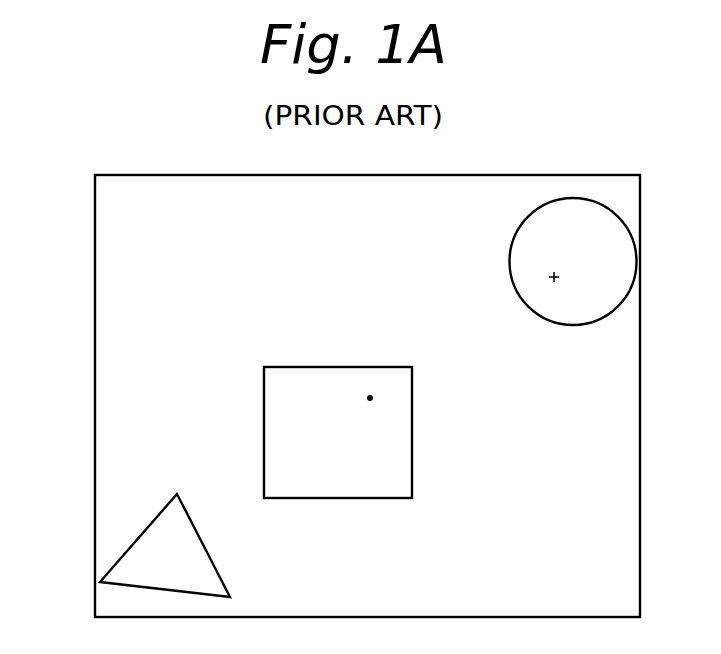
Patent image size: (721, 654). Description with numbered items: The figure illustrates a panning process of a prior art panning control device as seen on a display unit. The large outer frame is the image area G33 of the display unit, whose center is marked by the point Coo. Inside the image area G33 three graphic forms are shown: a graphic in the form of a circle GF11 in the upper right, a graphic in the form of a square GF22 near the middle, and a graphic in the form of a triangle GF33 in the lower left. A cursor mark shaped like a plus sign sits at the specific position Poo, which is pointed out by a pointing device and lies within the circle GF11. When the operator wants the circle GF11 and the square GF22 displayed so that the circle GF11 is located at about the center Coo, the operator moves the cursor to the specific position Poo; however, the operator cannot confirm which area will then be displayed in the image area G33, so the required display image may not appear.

The image area G33 is at (107, 382).
The graphic in the form of a circle GF11 is at (590, 323).
The specific position Poo is at (560, 288).
The graphic in the form of a square GF22 is at (396, 499).
The center of the image area Coo is at (368, 402).
The graphic in the form of a triangle GF33 is at (213, 567).